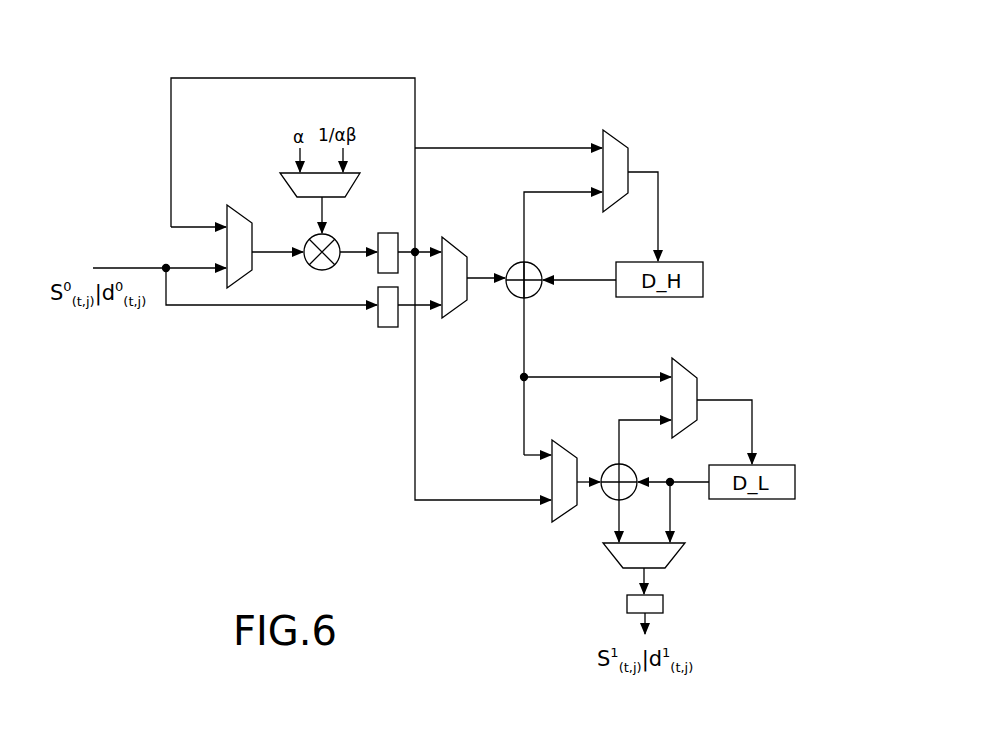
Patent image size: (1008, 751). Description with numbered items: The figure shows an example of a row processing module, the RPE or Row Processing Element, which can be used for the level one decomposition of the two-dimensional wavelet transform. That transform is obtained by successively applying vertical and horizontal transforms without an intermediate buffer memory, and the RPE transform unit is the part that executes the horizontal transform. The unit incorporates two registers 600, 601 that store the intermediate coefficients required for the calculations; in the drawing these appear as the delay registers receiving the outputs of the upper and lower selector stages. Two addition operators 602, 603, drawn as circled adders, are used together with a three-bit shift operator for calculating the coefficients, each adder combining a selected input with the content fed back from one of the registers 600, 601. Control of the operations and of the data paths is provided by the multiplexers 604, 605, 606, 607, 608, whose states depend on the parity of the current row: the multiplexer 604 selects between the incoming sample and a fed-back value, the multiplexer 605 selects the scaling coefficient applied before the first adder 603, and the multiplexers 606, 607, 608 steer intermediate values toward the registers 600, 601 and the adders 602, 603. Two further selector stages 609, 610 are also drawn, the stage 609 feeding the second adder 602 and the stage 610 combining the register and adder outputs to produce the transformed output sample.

The register 600 is at (703, 278).
The register 601 is at (795, 482).
The addition operator 602 is at (612, 466).
The addition operator 603 is at (514, 265).
The multiplexer 604 is at (240, 205).
The multiplexer 605 is at (287, 180).
The multiplexer 606 is at (613, 131).
The multiplexer 607 is at (451, 318).
The multiplexer 608 is at (683, 367).
The multiplexer 609 is at (560, 520).
The output multiplexer 610 is at (678, 557).